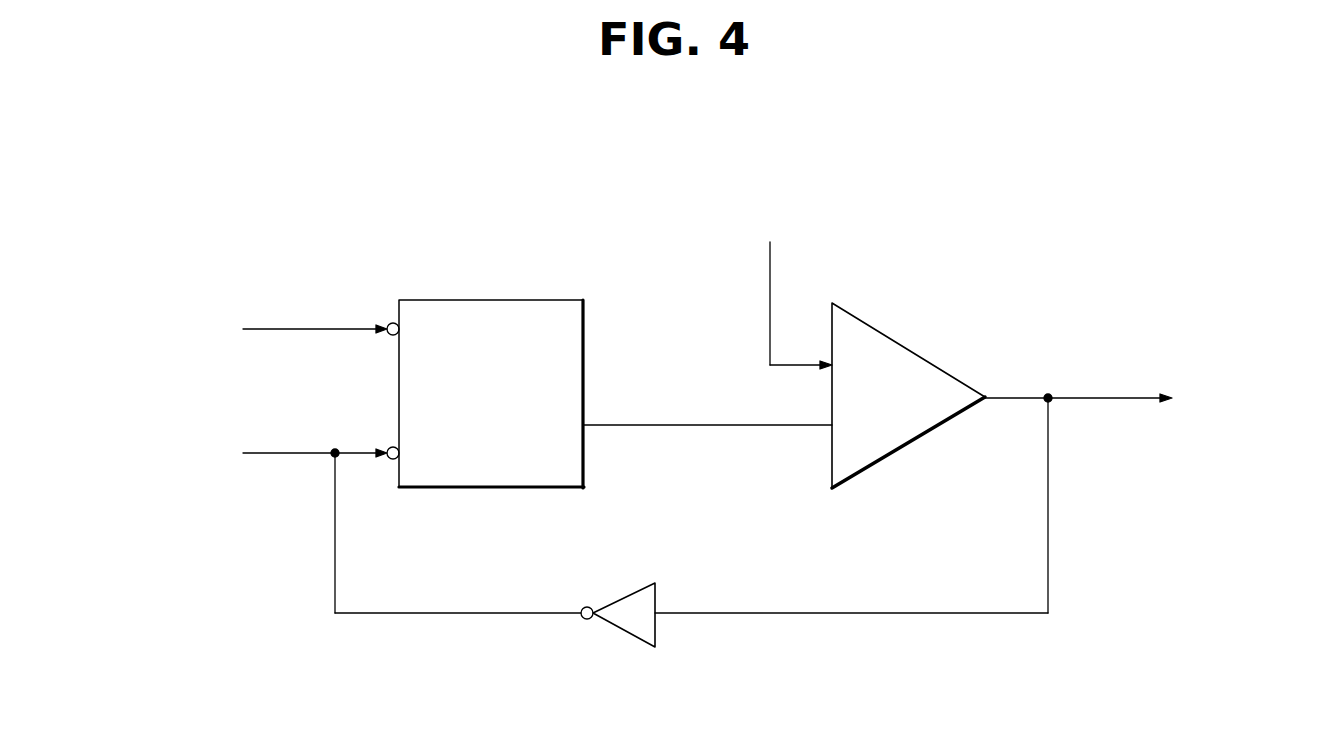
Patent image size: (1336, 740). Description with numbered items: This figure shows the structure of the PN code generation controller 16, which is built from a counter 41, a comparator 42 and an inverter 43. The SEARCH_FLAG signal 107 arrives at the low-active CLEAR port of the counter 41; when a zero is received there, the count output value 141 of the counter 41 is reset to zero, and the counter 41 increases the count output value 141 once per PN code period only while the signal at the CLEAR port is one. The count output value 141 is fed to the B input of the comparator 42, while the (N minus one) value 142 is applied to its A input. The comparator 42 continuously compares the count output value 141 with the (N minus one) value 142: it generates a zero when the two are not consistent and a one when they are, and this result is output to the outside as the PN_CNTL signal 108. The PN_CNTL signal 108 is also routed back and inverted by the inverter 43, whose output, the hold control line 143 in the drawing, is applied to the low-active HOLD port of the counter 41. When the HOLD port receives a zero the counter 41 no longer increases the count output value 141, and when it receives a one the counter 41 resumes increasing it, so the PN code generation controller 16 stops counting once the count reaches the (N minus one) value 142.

The PN code generation controller 16 is at (1006, 200).
The counter 41 is at (499, 299).
The comparator 42 is at (893, 340).
The inverter 43 is at (618, 600).
The SEARCH_FLAG signal 107 is at (307, 327).
The PN_CNTL signal 108 is at (1093, 396).
The count output value 141 is at (678, 423).
The (N−1) value 142 is at (770, 303).
The hold feedback line 143 is at (438, 616).